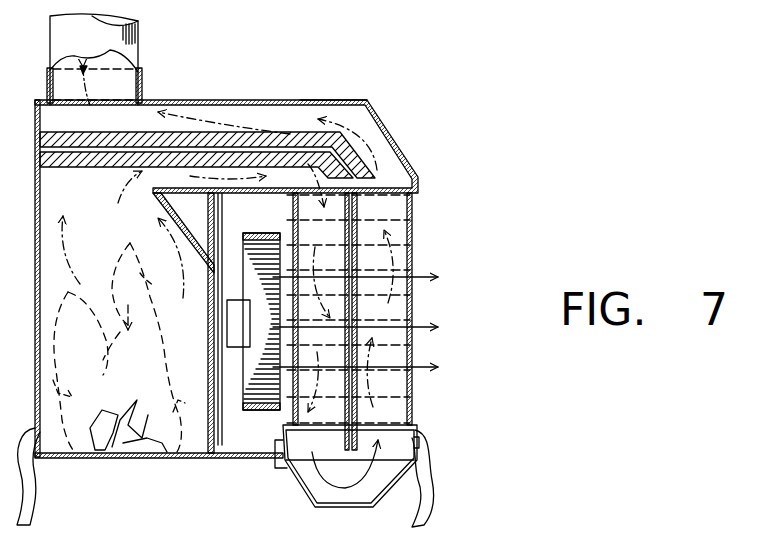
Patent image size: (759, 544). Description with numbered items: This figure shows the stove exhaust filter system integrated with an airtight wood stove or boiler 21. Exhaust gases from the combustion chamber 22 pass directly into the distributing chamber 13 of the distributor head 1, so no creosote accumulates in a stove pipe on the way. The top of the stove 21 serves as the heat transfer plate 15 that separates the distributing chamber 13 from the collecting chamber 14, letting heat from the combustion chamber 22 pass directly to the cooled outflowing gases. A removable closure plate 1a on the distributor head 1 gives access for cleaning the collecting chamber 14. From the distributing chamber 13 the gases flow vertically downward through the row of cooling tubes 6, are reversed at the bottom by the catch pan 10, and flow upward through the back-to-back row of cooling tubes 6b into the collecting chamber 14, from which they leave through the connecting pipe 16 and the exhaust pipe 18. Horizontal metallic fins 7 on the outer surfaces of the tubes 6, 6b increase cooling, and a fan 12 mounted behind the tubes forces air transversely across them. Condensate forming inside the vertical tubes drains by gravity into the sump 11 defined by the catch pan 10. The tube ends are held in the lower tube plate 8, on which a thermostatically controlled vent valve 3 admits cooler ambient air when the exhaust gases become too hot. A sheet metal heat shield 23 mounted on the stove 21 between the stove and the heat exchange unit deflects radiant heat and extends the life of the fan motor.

The distributor head 1 is at (392, 140).
The removable closure plate 1a is at (337, 100).
The vent valve 3 is at (430, 428).
The cooling tubes 6 is at (407, 205).
The cooling tubes 6b is at (344, 233).
The metallic fins 7 is at (413, 242).
The lower tube plate 8 is at (283, 445).
The catch pan 10 is at (310, 505).
The sump 11 is at (350, 481).
The fan 12 is at (272, 413).
The distributing chamber 13 is at (304, 188).
The collecting chamber 14 is at (402, 183).
The heat transfer plate 15 is at (293, 133).
The connecting pipe 16 is at (143, 77).
The exhaust pipe 18 is at (100, 36).
The airtight wood stove 21 is at (40, 185).
The combustion chamber 22 is at (147, 237).
The heat shield 23 is at (225, 218).